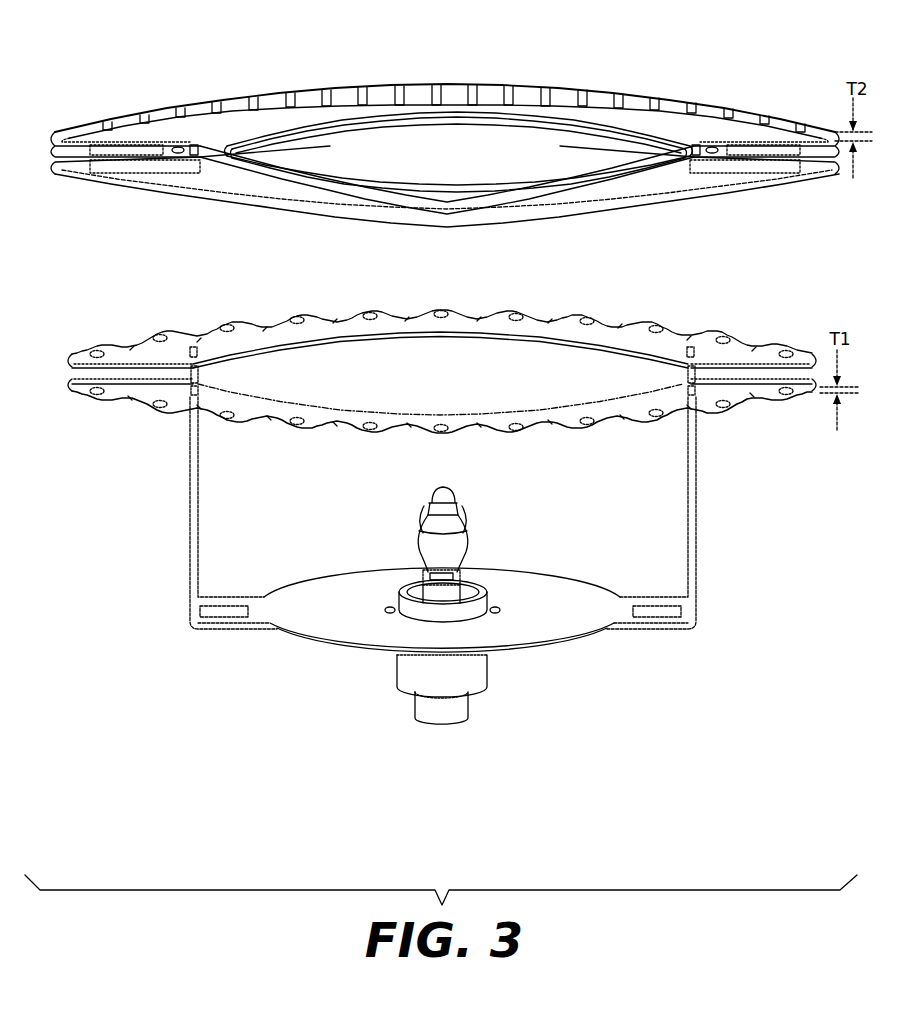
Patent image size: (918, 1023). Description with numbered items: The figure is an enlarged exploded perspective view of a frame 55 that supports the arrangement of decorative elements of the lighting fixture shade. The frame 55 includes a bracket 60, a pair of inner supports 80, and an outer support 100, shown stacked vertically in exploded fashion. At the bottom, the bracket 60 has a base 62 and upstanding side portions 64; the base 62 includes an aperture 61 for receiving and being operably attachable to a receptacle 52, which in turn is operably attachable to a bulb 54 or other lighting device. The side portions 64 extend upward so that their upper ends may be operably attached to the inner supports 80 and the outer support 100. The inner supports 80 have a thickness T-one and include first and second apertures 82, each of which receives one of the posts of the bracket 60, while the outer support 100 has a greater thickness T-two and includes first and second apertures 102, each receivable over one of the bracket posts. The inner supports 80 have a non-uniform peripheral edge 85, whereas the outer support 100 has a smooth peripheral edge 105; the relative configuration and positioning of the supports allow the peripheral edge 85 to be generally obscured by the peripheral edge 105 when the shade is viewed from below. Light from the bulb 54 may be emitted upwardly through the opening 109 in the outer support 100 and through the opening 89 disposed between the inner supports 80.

The frame 55 is at (120, 68).
The outer support 100 is at (779, 96).
The first and second apertures 102 is at (194, 145).
The peripheral edge 105 is at (473, 89).
The opening 109 is at (424, 157).
The inner supports 80 is at (712, 326).
The first and second apertures 82 is at (192, 346).
The peripheral edge 85 is at (361, 318).
The opening 89 is at (420, 372).
The side portions 64 is at (189, 551).
The base 62 is at (568, 592).
The aperture 61 is at (482, 616).
The receptacle 52 is at (422, 598).
The bulb 54 is at (463, 549).
The bracket 60 is at (573, 652).